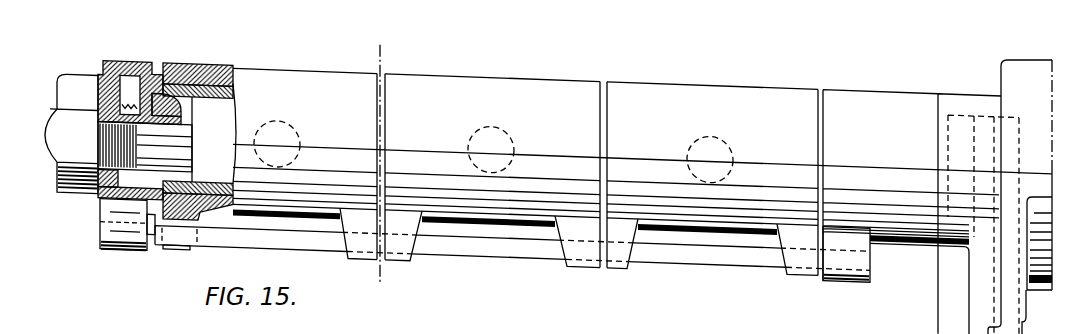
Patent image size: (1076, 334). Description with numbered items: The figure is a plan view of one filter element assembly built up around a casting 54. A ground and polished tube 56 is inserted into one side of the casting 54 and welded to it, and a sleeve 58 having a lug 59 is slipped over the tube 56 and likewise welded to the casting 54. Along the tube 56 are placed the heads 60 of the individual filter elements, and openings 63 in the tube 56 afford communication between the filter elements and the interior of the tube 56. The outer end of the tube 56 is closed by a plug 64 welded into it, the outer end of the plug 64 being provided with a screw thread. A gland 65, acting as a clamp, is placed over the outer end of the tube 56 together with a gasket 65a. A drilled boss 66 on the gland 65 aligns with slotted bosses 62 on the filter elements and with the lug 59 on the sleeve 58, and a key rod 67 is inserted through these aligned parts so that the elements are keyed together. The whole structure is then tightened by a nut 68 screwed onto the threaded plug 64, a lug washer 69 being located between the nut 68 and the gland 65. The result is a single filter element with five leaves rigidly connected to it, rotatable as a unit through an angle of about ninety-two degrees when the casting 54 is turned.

The casting 54 is at (966, 64).
The ground and polished tube 56 is at (233, 55).
The sleeve 58 is at (879, 64).
The lug 59 is at (847, 252).
The head 60 is at (301, 61).
The slotted boss 62 is at (617, 248).
The opening 63 is at (298, 122).
The plug 64 is at (160, 75).
The gland 65 is at (115, 58).
The gasket 65a is at (164, 79).
The drilled boss 66 is at (115, 246).
The key rod 67 is at (463, 232).
The nut 68 is at (58, 180).
The lug washer 69 is at (98, 189).